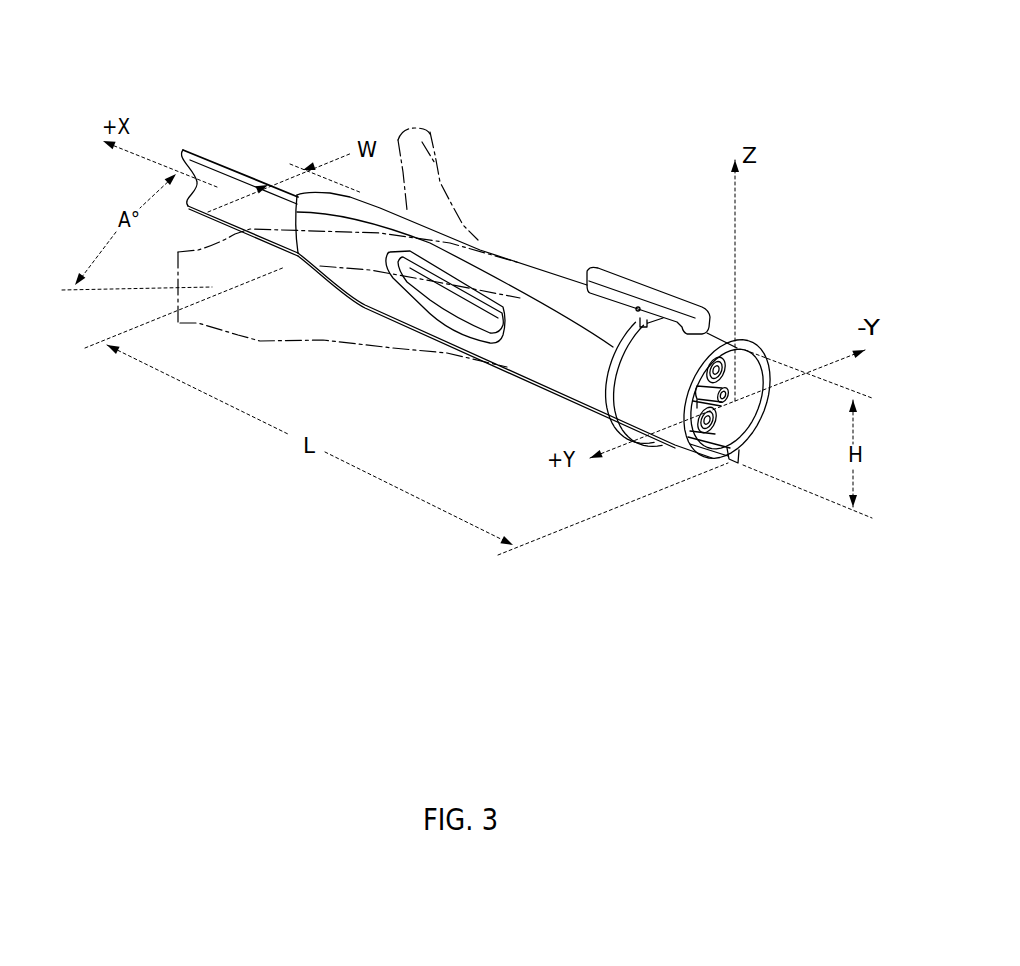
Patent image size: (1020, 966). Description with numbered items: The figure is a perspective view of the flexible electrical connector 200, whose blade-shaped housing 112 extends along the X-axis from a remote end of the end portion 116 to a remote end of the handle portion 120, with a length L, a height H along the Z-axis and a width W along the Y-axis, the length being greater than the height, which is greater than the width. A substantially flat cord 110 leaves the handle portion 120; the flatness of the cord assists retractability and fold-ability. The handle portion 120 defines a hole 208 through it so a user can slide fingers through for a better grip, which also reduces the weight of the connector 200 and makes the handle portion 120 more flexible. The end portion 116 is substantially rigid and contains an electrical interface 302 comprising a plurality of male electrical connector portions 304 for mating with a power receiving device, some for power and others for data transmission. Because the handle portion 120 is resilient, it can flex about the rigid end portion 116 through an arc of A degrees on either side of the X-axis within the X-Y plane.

The cord 110 is at (215, 165).
The blade-shaped housing 112 is at (556, 286).
The end portion 116 is at (718, 472).
The handle portion 120 is at (540, 358).
The flexible electrical connector 200 is at (557, 113).
The hole 208 is at (472, 298).
The electrical interface 302 is at (742, 412).
The male electrical connector portions 304 is at (723, 388).